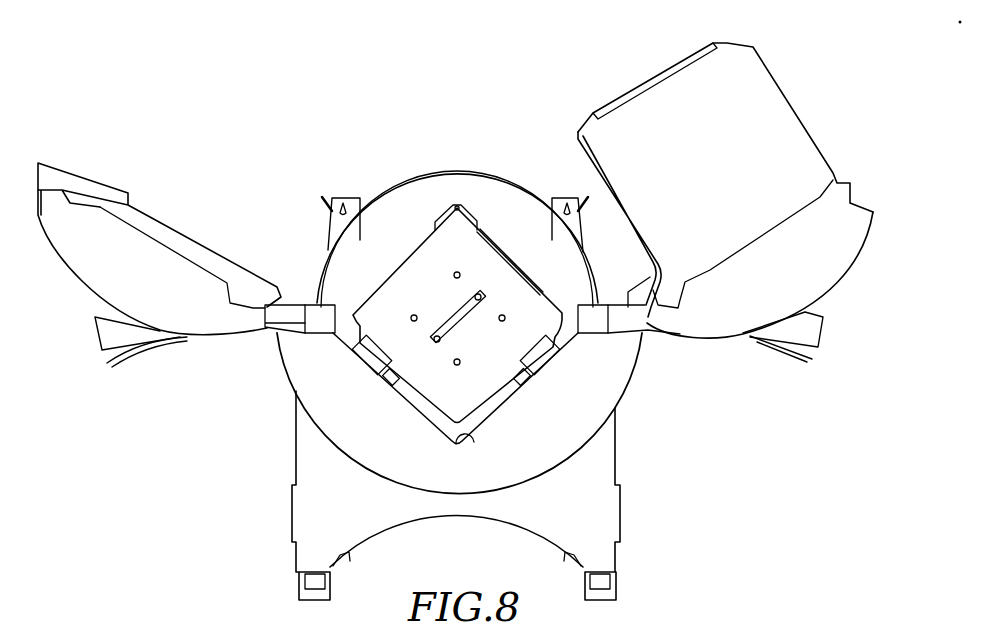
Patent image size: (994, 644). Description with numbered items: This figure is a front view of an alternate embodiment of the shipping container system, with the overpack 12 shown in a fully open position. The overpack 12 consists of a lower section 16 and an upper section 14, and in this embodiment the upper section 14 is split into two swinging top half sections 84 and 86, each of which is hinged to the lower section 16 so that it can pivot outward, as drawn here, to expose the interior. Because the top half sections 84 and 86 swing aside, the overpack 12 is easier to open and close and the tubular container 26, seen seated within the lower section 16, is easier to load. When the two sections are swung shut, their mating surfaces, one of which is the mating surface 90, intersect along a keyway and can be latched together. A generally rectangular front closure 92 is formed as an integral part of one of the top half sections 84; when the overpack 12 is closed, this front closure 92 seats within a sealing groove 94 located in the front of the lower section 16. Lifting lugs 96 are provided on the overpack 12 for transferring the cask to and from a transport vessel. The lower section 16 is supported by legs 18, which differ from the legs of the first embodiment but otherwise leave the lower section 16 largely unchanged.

The overpack 12 is at (645, 403).
The upper section 14 is at (235, 206).
The lower section 16 is at (288, 380).
The legs 18 is at (619, 550).
The tubular container 26 is at (437, 297).
The top half section 84 is at (852, 262).
The top half section 86 is at (216, 336).
The mating surface 90 is at (92, 180).
The front closure 92 is at (790, 105).
The sealing groove 94 is at (470, 440).
The lifting lugs 96 is at (357, 198).